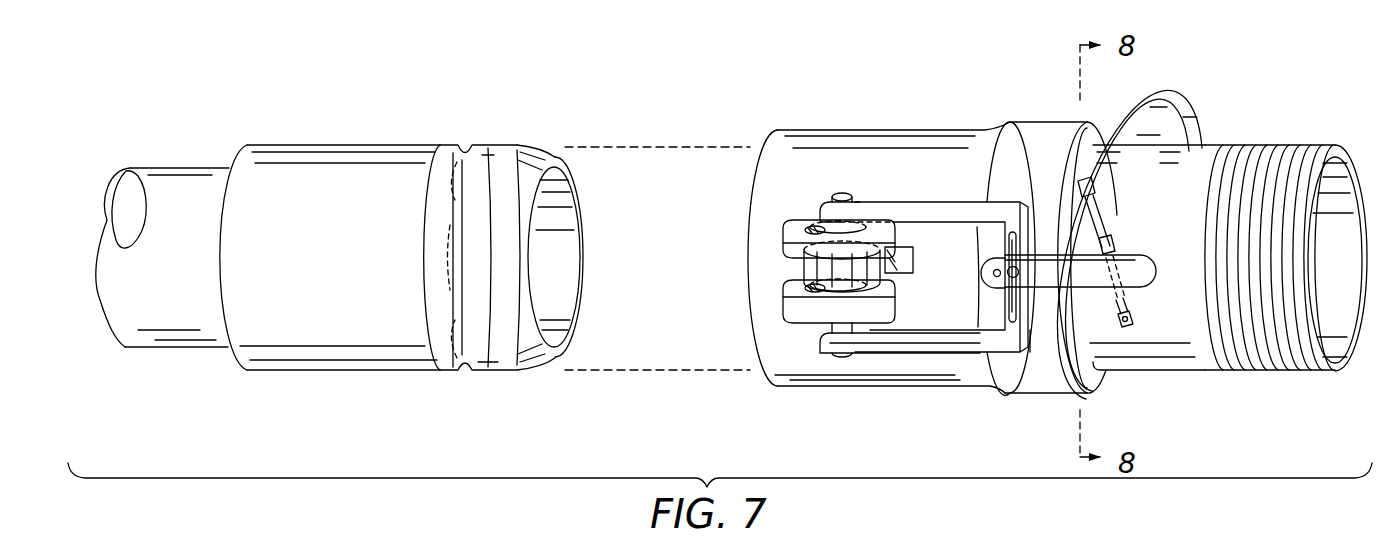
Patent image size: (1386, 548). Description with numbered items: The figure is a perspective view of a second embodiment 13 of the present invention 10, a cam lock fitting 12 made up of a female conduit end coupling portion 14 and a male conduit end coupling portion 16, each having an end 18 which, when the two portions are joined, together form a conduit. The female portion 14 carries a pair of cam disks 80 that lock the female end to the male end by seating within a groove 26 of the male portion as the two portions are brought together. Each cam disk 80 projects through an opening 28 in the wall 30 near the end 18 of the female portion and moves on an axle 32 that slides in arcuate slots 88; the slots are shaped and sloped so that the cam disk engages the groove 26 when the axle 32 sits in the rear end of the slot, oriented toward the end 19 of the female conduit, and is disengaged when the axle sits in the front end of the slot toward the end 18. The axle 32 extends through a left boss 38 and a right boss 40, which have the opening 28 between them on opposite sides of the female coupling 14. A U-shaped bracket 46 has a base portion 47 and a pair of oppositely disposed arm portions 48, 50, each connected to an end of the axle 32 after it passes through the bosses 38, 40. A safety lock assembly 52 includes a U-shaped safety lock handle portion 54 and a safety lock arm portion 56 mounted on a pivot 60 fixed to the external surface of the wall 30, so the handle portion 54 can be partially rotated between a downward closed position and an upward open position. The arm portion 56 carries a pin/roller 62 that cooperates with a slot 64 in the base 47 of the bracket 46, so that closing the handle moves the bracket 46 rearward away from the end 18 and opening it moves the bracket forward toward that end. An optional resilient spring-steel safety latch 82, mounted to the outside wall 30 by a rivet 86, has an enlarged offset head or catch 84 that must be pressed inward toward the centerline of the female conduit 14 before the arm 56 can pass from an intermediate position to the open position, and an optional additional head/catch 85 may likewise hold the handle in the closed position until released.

The present invention 10 is at (1305, 68).
The cam lock fitting 12 is at (733, 126).
The second embodiment 13 is at (890, 88).
The female conduit end coupling portion 14 is at (818, 127).
The male conduit end coupling portion 16 is at (364, 142).
The end 18 is at (757, 353).
The end of female conduit 19 is at (1332, 373).
The groove 26 is at (465, 156).
The opening 28 is at (889, 250).
The wall 30 is at (912, 255).
The axle 32 is at (838, 192).
The left boss 38 is at (795, 318).
The right boss 40 is at (795, 250).
The U-shaped bracket 46 is at (1030, 216).
The base portion 47 is at (1033, 330).
The arm portion 48 is at (955, 345).
The arm portion 50 is at (950, 220).
The safety lock assembly 52 is at (1181, 86).
The U-shaped safety lock handle portion 54 is at (1205, 121).
The safety lock arm portion 56 is at (1090, 330).
The pivot 60 is at (993, 275).
The pin/roller 62 is at (1047, 250).
The slot 64 is at (1050, 324).
The cam disk 80 is at (879, 300).
The safety latch 82 is at (1160, 330).
The head or catch 84 is at (1090, 183).
The head/catch 85 is at (1109, 243).
The rivet 86 is at (1125, 330).
The arcuate slot 88 is at (818, 228).